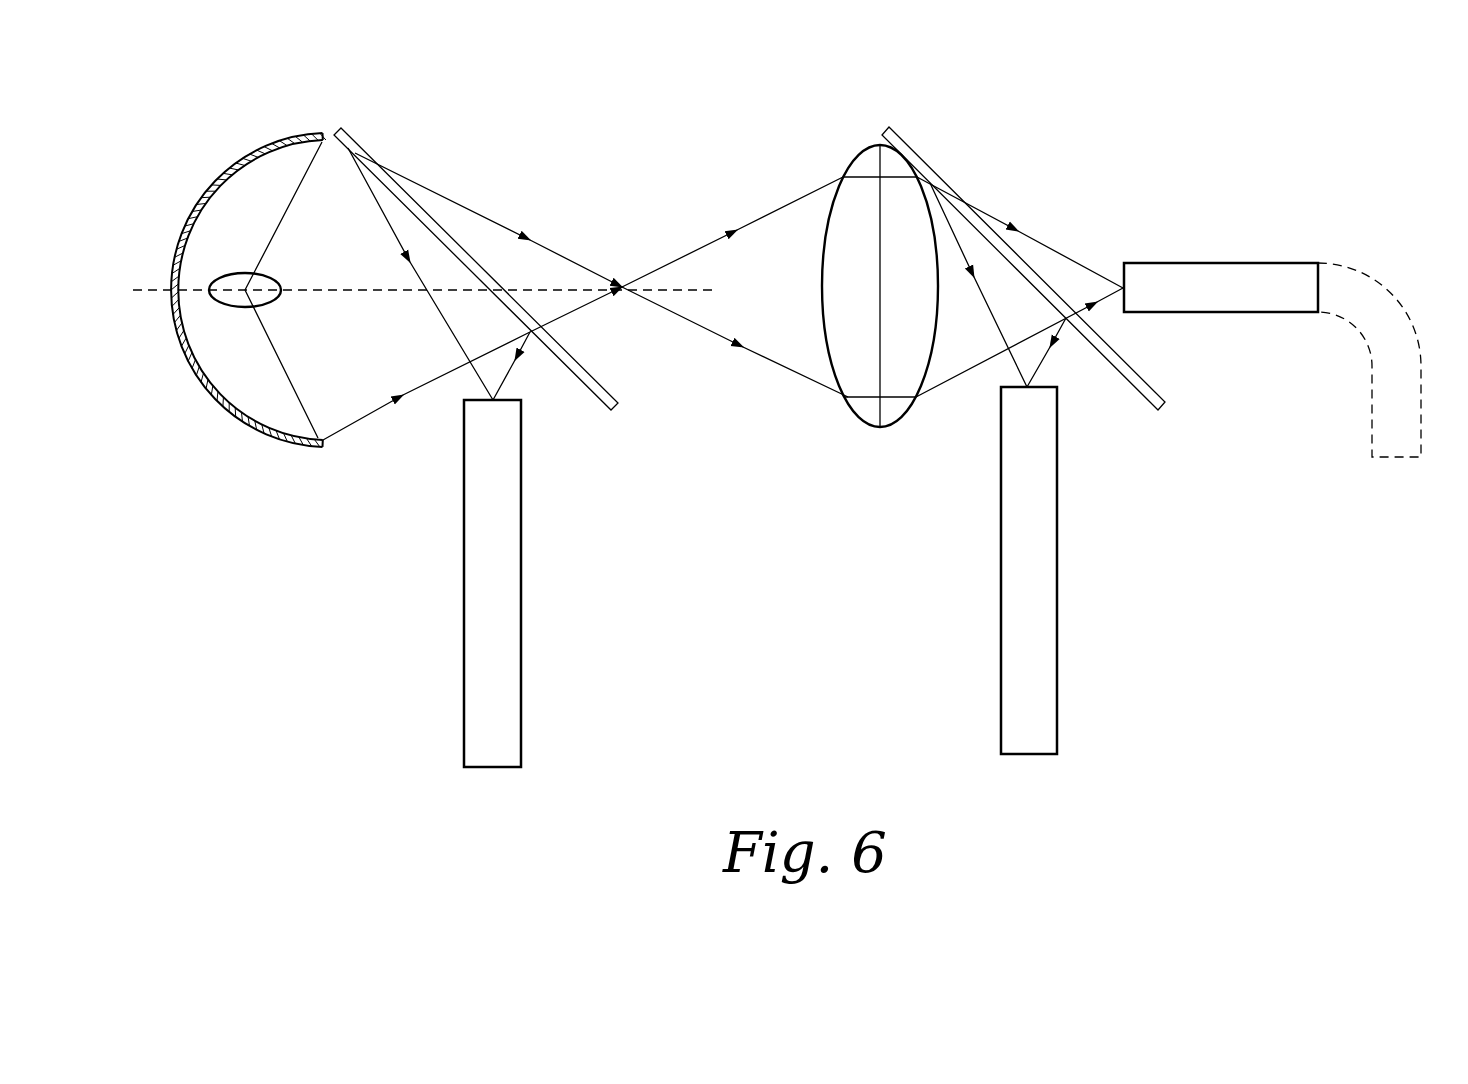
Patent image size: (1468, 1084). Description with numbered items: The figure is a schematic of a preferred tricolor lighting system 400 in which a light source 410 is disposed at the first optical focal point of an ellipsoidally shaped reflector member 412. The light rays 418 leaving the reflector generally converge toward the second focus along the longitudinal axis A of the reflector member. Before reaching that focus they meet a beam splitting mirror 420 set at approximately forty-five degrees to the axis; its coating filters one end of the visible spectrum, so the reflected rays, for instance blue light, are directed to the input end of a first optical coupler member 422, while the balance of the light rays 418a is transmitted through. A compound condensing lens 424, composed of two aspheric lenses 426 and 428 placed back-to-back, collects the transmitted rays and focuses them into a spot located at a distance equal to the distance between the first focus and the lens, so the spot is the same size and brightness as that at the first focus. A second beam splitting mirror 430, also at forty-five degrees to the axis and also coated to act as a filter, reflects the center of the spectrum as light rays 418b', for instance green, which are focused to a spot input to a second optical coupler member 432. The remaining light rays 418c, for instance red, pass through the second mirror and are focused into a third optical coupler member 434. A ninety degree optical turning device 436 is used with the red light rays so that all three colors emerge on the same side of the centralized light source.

The optical system 400 is at (1270, 146).
The light source 410 is at (265, 305).
The reflector member 412 is at (258, 150).
The light rays 418 is at (373, 412).
The balance of the light rays 418a is at (563, 257).
The reflected light rays 418b' is at (994, 323).
The transmitted light rays 418c is at (1088, 269).
The beam splitting mirror 420 is at (580, 380).
The first optical coupler member 422 is at (521, 643).
The compound condensing lens 424 is at (856, 297).
The aspheric lens 426 is at (860, 417).
The aspheric lens 428 is at (903, 427).
The second beam splitting mirror 430 is at (1133, 387).
The second optical coupler member 432 is at (1046, 658).
The third optical coupler member 434 is at (1220, 300).
The optical turning device 436 is at (1402, 325).